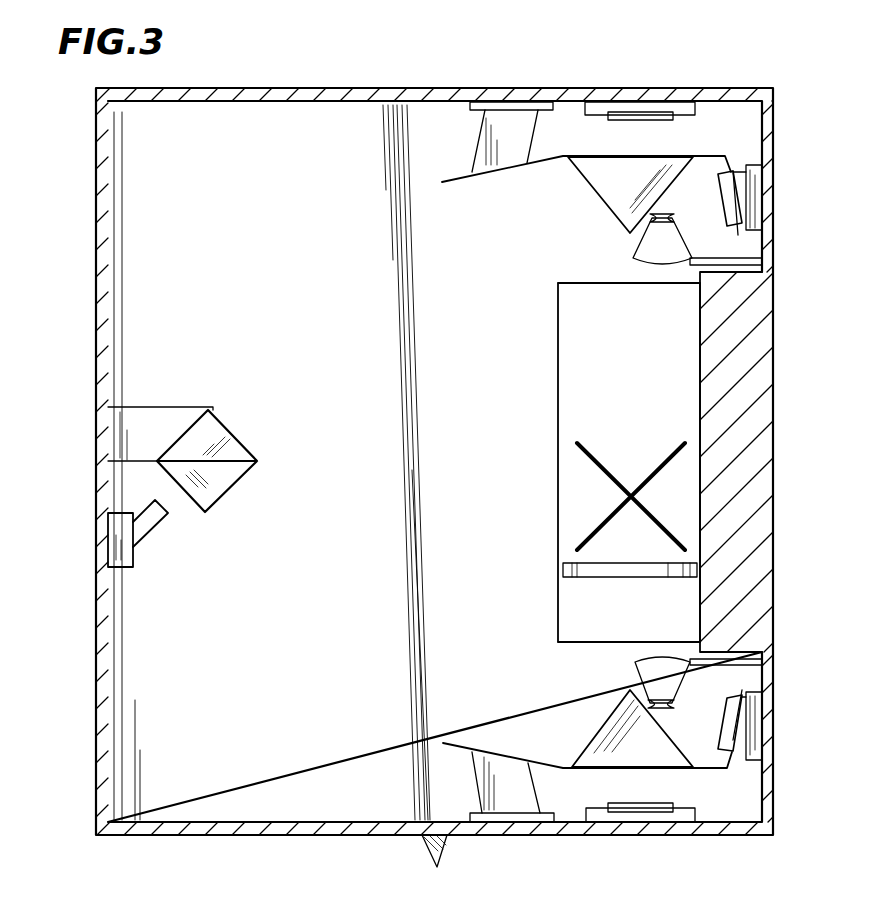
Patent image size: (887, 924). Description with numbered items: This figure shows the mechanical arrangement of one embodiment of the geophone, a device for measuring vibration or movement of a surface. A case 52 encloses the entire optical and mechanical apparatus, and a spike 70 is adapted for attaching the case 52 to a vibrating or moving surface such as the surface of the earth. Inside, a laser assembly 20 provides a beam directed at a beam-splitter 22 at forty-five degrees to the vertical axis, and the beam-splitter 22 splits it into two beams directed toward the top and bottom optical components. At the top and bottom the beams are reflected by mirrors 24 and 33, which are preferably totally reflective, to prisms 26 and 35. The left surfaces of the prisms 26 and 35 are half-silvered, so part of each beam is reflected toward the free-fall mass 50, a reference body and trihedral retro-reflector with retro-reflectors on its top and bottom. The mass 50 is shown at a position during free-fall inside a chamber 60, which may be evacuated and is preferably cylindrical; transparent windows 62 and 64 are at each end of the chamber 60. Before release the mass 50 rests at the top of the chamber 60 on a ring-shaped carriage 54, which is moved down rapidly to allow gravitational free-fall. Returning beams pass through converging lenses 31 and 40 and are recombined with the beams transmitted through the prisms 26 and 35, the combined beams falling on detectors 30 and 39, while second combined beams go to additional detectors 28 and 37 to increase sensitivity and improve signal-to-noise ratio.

The laser assembly 20 is at (150, 532).
The beam-splitter 22 is at (237, 440).
The mirror 24 is at (459, 184).
The prism 26 is at (611, 192).
The detector 28 is at (628, 110).
The detector 30 is at (733, 195).
The converging lens 31 is at (635, 262).
The mirror 33 is at (498, 750).
The prism 35 is at (613, 759).
The detector 37 is at (638, 808).
The detector 39 is at (735, 730).
The converging lens 40 is at (632, 662).
The free-fall mass 50 is at (646, 464).
The case 52 is at (97, 672).
The carriage 54 is at (594, 578).
The chamber 60 is at (608, 357).
The transparent window 62 is at (601, 283).
The transparent window 64 is at (602, 643).
The spike 70 is at (423, 850).